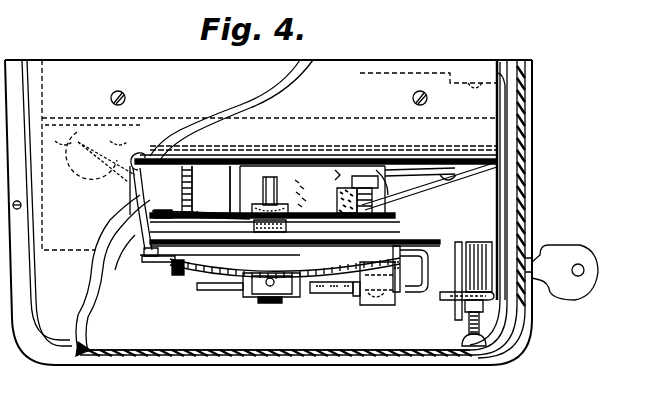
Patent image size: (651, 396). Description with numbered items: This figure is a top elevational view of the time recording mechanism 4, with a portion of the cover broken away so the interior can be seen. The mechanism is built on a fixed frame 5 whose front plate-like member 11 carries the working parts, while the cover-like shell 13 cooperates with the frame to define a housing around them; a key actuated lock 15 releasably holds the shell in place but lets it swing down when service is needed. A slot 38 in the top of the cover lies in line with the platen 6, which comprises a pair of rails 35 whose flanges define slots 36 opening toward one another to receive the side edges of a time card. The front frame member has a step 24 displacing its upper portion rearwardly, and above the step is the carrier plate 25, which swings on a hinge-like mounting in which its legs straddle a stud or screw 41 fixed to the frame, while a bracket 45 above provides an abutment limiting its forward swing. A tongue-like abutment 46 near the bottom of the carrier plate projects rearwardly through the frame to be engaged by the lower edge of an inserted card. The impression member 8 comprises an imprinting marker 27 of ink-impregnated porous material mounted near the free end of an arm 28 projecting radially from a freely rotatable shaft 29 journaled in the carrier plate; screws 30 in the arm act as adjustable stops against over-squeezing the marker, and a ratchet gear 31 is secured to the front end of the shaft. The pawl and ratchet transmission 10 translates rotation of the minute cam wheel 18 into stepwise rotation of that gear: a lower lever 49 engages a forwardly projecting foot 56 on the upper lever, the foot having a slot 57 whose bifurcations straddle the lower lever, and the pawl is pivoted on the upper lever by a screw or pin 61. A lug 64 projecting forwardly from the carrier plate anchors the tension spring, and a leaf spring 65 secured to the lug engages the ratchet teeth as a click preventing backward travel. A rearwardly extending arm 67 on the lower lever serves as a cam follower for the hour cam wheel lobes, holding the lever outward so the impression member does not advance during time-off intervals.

The time recording mechanism 4 is at (529, 363).
The fixed frame 5 is at (455, 52).
The platen 6 is at (410, 204).
The impression member 8 is at (332, 173).
The pawl and ratchet transmission 10 is at (305, 302).
The front plate-like member 11 is at (115, 270).
The cover-like shell 13 is at (340, 356).
The key actuated lock 15 is at (535, 240).
The minute cam wheel 18 is at (226, 291).
The step 24 is at (503, 197).
The carrier plate 25 is at (398, 229).
The imprinting marker 27 is at (337, 194).
The arm 28 is at (226, 213).
The shaft 29 is at (272, 177).
The screws 30 is at (396, 184).
The ratchet gear 31 is at (188, 276).
The rails 35 is at (170, 170).
The slots 36 is at (160, 158).
The slot 38 is at (140, 140).
The stud or screw 41 is at (193, 184).
The bracket 45 is at (118, 226).
The tongue-like abutment 46 is at (230, 159).
The lower lever 49 is at (330, 294).
The foot 56 is at (372, 303).
The slot 57 is at (355, 296).
The screw or pin 61 is at (398, 300).
The lug 64 is at (176, 276).
The leaf spring 65 is at (160, 262).
The arm 67 is at (428, 266).